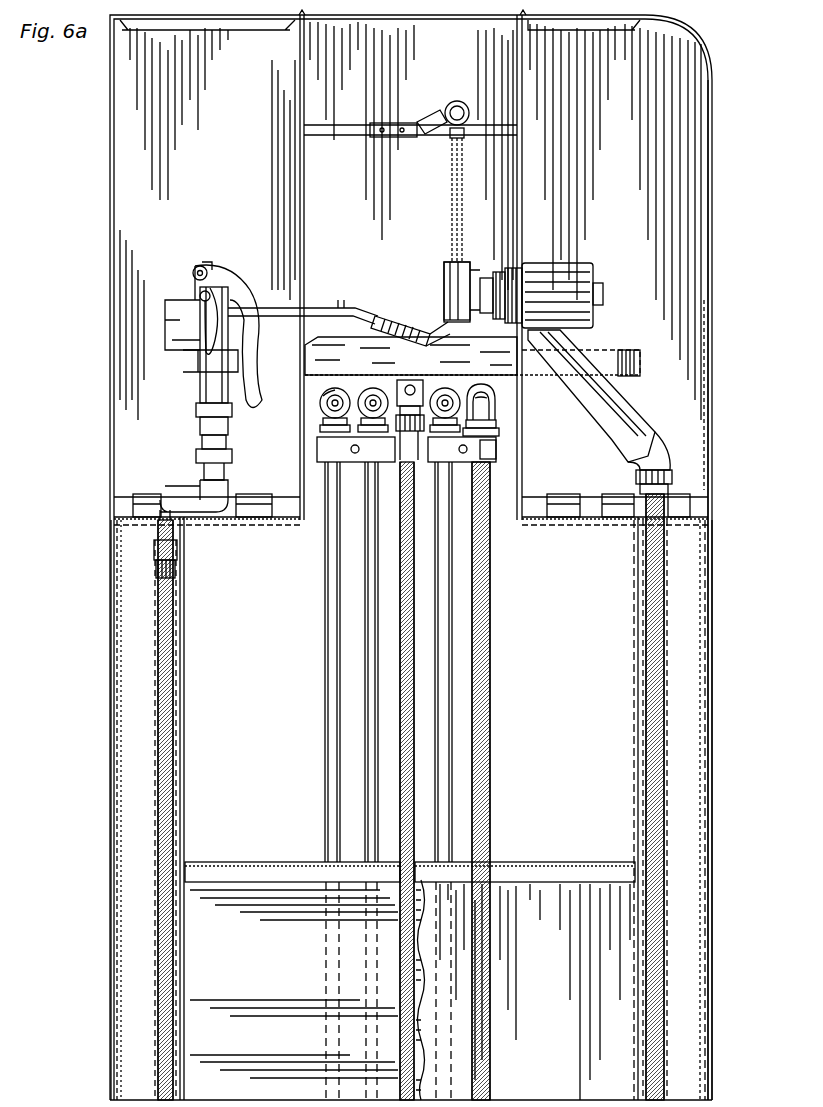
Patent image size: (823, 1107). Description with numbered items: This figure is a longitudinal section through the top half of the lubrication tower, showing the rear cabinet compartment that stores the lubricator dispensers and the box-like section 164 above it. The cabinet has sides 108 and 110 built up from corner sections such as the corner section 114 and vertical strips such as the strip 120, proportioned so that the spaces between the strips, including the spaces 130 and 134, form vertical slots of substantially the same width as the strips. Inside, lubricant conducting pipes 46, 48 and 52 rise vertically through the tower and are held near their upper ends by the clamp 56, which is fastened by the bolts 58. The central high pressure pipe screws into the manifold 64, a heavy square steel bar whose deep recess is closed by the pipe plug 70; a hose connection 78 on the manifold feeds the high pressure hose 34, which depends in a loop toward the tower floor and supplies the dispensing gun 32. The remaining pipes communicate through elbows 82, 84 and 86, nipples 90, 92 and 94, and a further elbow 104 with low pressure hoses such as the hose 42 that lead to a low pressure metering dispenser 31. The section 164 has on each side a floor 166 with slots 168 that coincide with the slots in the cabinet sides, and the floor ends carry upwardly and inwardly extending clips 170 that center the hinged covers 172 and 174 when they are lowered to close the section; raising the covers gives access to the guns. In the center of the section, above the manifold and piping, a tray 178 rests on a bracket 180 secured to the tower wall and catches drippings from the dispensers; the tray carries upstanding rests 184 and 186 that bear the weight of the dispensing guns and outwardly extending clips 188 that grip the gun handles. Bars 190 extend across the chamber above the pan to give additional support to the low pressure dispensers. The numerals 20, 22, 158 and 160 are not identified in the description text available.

The tank 20 is at (195, 686).
The tank inner wall 22 is at (193, 657).
The lubricator dispenser 31 is at (553, 264).
The dispensing gun 32 is at (208, 262).
The lubricant conducting hose 34 is at (410, 666).
The lubricant conducting hose 42 is at (482, 618).
The lubricant conducting pipe 46 is at (325, 612).
The lubricant conducting pipe 48 is at (365, 626).
The lubricant conducting pipe 52 is at (445, 648).
The clamp 56 is at (318, 452).
The bolt 58 is at (320, 442).
The manifold 64 is at (425, 388).
The pipe plug 70 is at (390, 385).
The hose connection 78 is at (448, 388).
The elbow 82 is at (320, 397).
The elbow 84 is at (322, 386).
The elbow 86 is at (488, 392).
The nipple 90 is at (320, 406).
The nipple 92 is at (358, 412).
The nipple 94 is at (460, 410).
The elbow 104 is at (490, 420).
The side 108 is at (105, 737).
The side 110 is at (713, 713).
The corner section 114 is at (116, 768).
The vertical strip 120 is at (704, 756).
The space 130 is at (686, 802).
The space 134 is at (128, 802).
The heater plate 158 is at (620, 925).
The hose 160 is at (190, 944).
The box-like section 164 is at (712, 464).
The floor 166 is at (230, 517).
The slot 168 is at (128, 518).
The clip 170 is at (258, 484).
The hinged cover 172 is at (112, 120).
The hinged cover 174 is at (712, 258).
The tray 178 is at (540, 378).
The bracket 180 is at (302, 385).
The upstanding rest 184 is at (315, 322).
The upstanding rest 186 is at (455, 328).
The clip 188 is at (190, 372).
The bar 190 is at (425, 160).